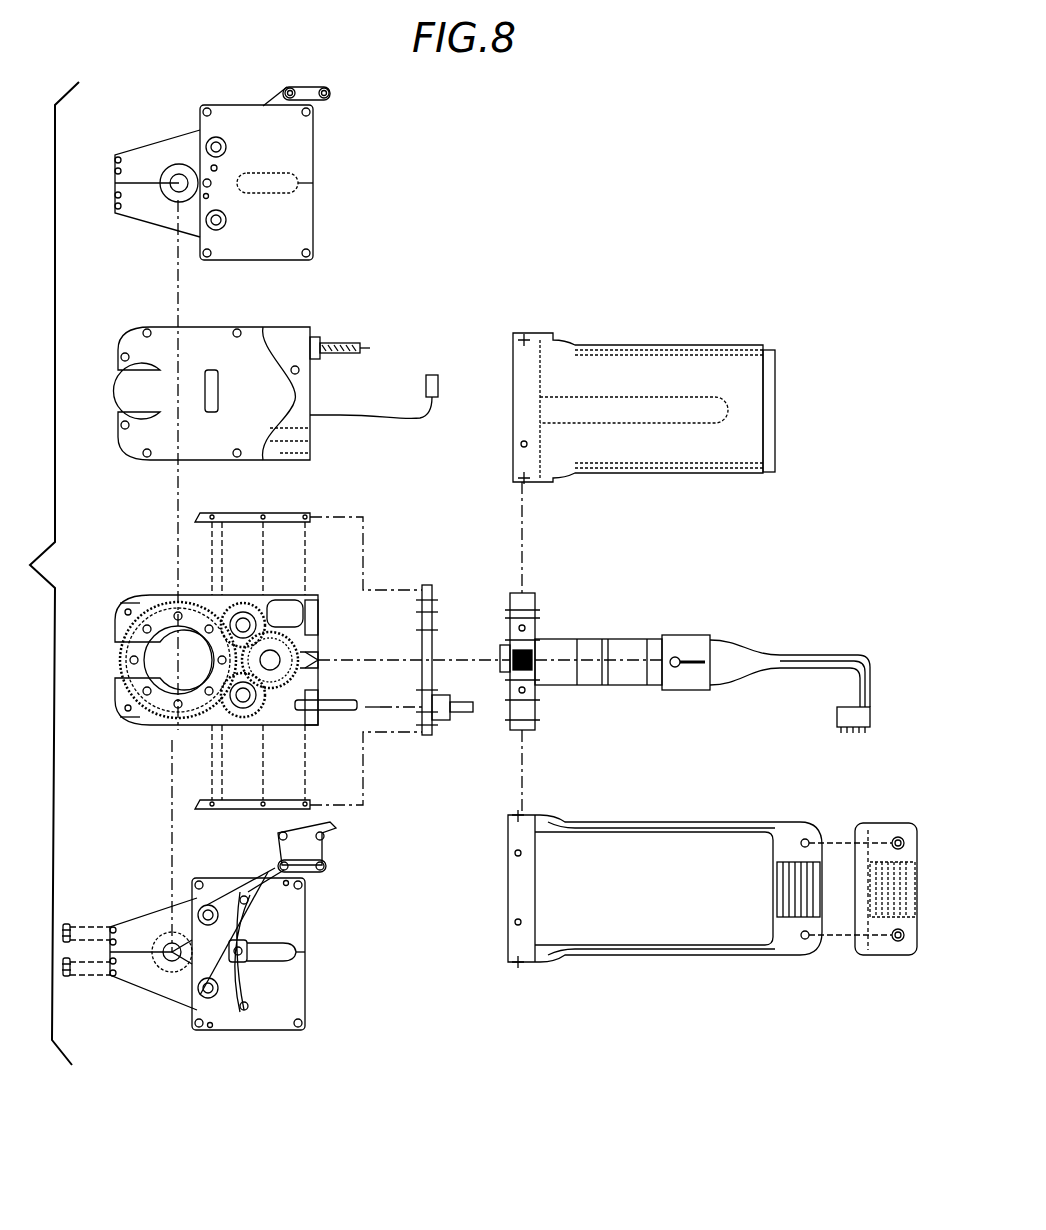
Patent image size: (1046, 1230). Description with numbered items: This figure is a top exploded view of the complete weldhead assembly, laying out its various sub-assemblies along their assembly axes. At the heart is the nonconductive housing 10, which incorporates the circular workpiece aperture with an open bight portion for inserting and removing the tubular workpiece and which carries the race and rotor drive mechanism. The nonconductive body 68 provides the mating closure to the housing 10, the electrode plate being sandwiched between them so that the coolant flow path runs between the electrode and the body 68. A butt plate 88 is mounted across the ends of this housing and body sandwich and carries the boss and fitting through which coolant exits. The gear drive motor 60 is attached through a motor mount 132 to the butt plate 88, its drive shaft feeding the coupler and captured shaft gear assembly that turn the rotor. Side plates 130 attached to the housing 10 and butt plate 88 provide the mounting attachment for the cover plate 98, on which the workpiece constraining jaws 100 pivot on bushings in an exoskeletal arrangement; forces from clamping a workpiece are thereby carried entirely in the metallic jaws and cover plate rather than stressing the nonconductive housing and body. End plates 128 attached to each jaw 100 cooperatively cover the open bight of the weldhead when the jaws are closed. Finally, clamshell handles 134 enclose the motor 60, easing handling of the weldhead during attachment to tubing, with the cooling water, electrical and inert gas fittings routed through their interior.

The nonconductive housing 10 is at (118, 603).
The gear drive motor 60 is at (620, 640).
The nonconductive body 68 is at (122, 347).
The butt plate 88 is at (424, 737).
The cover plate 98 is at (308, 996).
The jaws 100 is at (153, 1000).
The end plates 128 is at (63, 980).
The side plates 130 is at (275, 513).
The motor mount 132 is at (526, 732).
The clamshell handles 134 is at (630, 345).